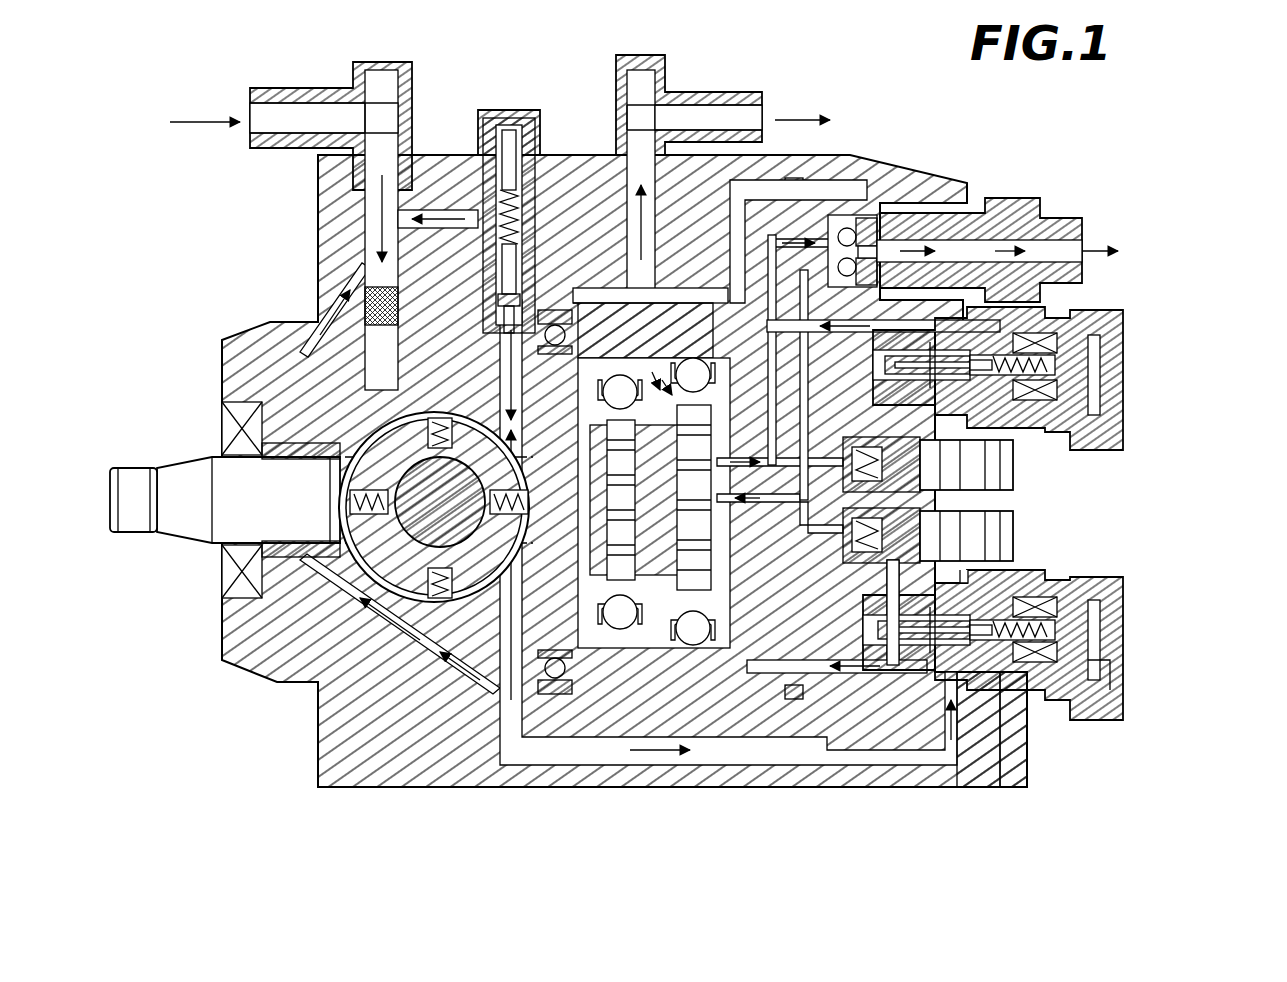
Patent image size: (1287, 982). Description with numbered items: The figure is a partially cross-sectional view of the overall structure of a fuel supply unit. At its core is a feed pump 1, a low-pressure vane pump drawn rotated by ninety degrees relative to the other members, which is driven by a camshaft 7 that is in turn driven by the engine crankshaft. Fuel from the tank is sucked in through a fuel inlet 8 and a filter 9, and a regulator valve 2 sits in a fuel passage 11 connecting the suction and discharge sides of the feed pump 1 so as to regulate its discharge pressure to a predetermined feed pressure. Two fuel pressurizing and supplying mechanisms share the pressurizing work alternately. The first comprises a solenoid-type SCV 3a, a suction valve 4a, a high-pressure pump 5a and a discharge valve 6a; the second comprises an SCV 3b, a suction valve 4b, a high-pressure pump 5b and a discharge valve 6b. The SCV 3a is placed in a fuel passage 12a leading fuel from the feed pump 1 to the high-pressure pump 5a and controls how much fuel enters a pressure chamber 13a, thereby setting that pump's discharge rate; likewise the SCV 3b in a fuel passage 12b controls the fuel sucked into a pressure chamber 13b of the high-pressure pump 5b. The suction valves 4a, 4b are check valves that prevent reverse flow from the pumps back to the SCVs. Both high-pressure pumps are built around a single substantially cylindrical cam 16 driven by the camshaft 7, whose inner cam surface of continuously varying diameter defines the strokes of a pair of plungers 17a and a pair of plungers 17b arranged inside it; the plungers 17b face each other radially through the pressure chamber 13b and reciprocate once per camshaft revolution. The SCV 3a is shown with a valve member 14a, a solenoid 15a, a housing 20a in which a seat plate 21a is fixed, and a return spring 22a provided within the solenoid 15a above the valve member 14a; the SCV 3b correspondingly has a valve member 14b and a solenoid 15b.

The feed pump 1 is at (270, 642).
The regulator valve 2 is at (545, 135).
The solenoid-type SCV 3a is at (1100, 582).
The solenoid-type SCV 3b is at (1098, 320).
The suction valve 4a is at (1020, 527).
The suction valve 4b is at (1020, 470).
The high-pressure pump 5a is at (849, 232).
The high-pressure pump 5b is at (724, 410).
The discharge valve 6a is at (900, 350).
The discharge valve 6b is at (852, 258).
The camshaft 7 is at (190, 468).
The fuel inlet 8 is at (288, 105).
The filter 9 is at (362, 288).
The fuel passage 11 is at (442, 215).
The fuel passage 12a is at (893, 660).
The fuel passage 12b is at (993, 212).
The pressure chamber 13a is at (692, 470).
The pressure chamber 13b is at (626, 420).
The valve member 14a is at (1000, 740).
The valve member 14b is at (1040, 230).
The solenoid 15a is at (1070, 626).
The solenoid 15b is at (1065, 385).
The cam 16 is at (637, 318).
The plungers 17a is at (703, 478).
The plungers 17b is at (612, 456).
The housing 20a is at (990, 566).
The seat plate 21a is at (1027, 758).
The return spring 22a is at (1075, 660).